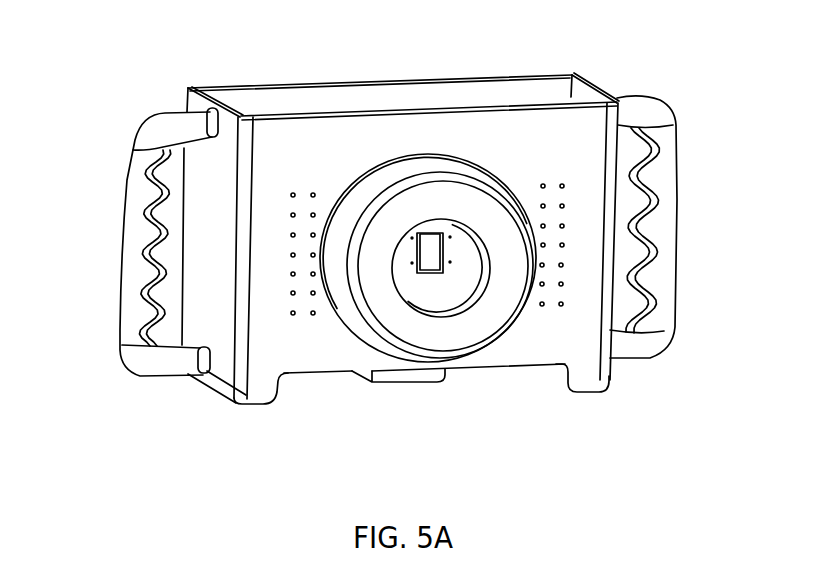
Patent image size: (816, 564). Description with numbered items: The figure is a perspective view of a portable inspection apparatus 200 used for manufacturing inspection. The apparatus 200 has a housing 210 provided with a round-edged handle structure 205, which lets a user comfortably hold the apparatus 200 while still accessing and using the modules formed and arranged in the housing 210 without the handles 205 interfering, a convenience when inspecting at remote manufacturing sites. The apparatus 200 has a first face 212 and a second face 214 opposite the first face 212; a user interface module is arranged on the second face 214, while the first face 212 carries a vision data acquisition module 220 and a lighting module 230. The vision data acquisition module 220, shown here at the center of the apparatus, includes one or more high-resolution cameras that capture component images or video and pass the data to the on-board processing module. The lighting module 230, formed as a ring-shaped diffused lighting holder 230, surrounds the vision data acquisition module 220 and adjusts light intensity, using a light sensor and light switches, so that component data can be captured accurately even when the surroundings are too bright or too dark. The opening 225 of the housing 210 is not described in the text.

The portable inspection apparatus 200 is at (731, 51).
The handle structure 205 is at (131, 228).
The housing 210 is at (608, 378).
The first face 212 is at (238, 392).
The second face 214 is at (243, 87).
The vision data acquisition module 220 is at (413, 241).
The tray opening / interior 225 is at (518, 76).
The lighting module 230 is at (282, 331).